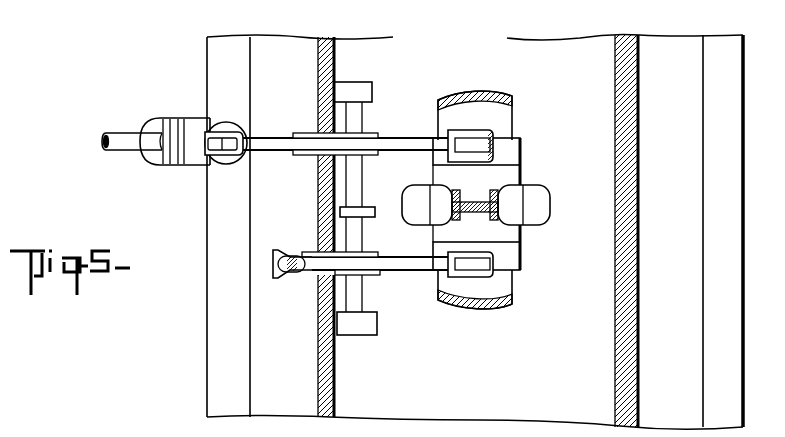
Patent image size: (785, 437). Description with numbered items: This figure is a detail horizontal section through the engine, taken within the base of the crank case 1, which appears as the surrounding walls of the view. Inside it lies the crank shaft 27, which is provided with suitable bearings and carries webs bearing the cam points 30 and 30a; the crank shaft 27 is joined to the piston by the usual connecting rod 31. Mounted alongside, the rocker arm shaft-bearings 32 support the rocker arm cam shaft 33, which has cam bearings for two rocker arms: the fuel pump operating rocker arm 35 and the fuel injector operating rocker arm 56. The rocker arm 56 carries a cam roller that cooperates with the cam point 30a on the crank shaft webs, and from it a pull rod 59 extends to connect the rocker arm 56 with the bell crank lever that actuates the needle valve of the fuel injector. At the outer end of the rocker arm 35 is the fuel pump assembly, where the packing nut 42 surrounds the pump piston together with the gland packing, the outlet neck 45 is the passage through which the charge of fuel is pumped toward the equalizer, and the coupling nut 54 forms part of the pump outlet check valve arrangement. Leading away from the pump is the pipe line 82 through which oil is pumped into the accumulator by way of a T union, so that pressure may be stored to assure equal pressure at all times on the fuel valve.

The base of the crank case 1 is at (475, 231).
The crank shaft 27 is at (513, 118).
The cam point 30 is at (497, 162).
The cam point 30a is at (497, 243).
The connecting rod 31 is at (452, 225).
The rocker arm shaft-bearings 32 is at (372, 97).
The rocker arm cam shaft 33 is at (378, 316).
The fuel pump operating rocker arm 35 is at (285, 155).
The packing nut 42 is at (224, 122).
The outlet neck 45 is at (196, 167).
The coupling nut 54 is at (155, 166).
The fuel injector operating rocker arm 56 is at (417, 275).
The pull rod 59 is at (297, 276).
The pipe line 82 is at (125, 150).